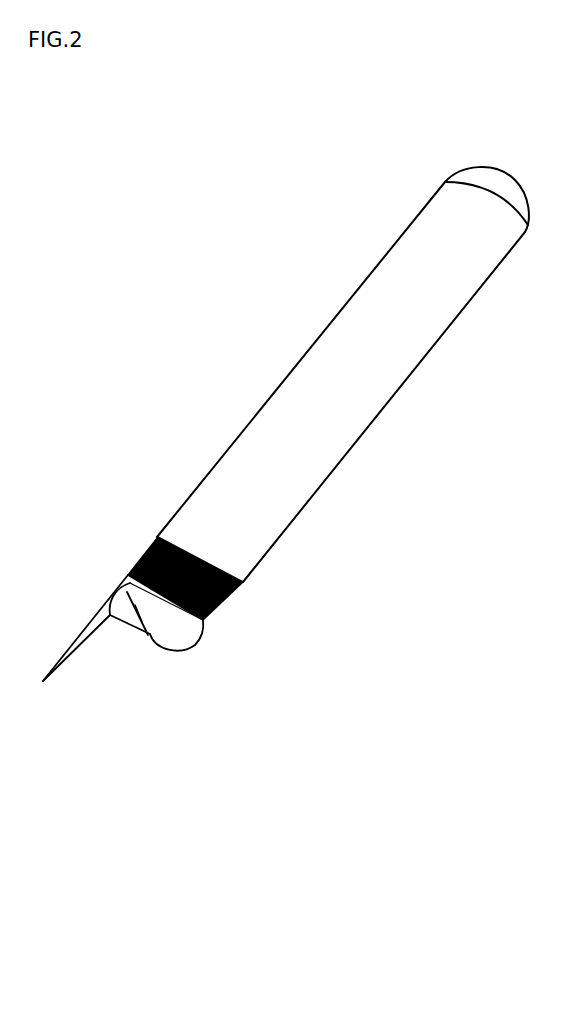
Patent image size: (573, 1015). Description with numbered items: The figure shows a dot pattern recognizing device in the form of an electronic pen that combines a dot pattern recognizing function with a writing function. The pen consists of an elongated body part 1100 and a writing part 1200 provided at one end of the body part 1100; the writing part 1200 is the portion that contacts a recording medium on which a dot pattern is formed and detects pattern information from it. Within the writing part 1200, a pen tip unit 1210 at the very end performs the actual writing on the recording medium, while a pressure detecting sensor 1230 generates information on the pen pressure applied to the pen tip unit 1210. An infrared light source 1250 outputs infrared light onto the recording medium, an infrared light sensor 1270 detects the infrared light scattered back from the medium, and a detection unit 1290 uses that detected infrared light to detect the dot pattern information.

The body part 1100 is at (332, 367).
The writing part 1200 is at (455, 728).
The pen tip unit 1210 is at (42, 683).
The pressure detecting sensor 1230 is at (114, 628).
The infrared light source 1250 is at (177, 627).
The infrared light sensor 1270 is at (125, 633).
The detection unit 1290 is at (227, 607).